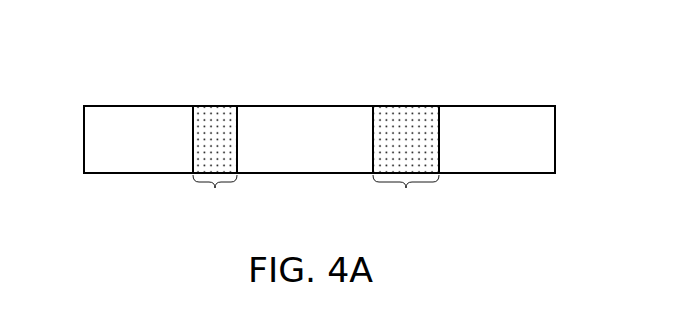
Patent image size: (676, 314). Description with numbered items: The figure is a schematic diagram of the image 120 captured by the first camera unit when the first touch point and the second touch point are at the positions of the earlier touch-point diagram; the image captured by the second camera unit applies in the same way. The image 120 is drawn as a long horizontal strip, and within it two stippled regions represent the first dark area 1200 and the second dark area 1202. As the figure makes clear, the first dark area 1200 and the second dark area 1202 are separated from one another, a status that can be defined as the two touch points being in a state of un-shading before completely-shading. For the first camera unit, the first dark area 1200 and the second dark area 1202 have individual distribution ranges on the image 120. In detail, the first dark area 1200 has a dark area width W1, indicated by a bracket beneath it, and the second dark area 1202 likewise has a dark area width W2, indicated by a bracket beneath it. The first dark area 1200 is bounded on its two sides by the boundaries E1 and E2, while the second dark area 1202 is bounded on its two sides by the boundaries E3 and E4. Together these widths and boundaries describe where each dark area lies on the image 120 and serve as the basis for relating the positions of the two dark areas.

The image 120 is at (84, 105).
The second dark area 1202 is at (215, 125).
The first dark area 1200 is at (410, 120).
The boundary of the first dark area E1 is at (373, 140).
The boundary of the first dark area E2 is at (440, 148).
The boundary of the second dark area E3 is at (191, 147).
The boundary of the second dark area E4 is at (238, 147).
The dark area width W1 is at (406, 195).
The dark area width W2 is at (215, 195).